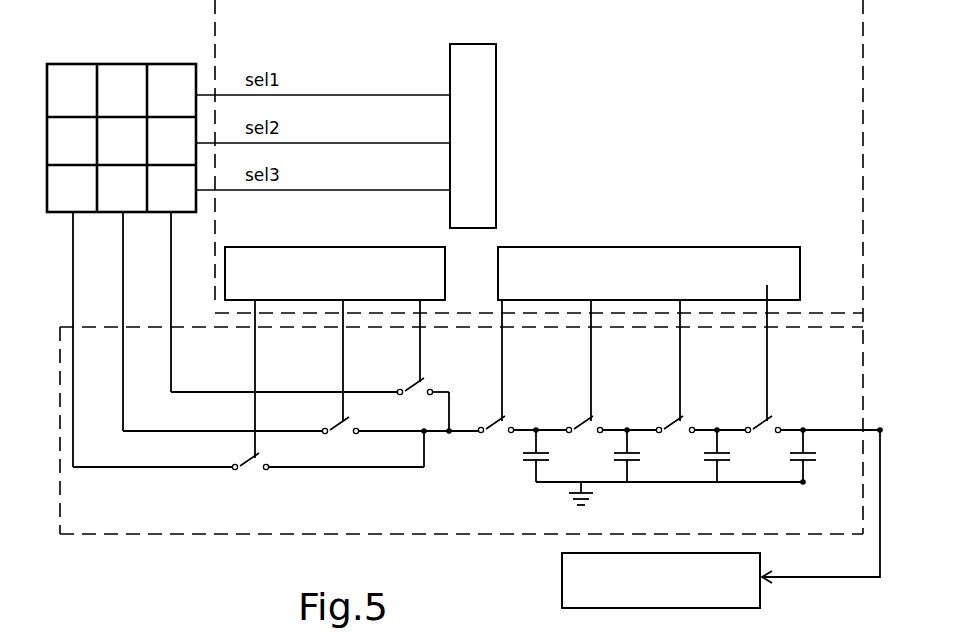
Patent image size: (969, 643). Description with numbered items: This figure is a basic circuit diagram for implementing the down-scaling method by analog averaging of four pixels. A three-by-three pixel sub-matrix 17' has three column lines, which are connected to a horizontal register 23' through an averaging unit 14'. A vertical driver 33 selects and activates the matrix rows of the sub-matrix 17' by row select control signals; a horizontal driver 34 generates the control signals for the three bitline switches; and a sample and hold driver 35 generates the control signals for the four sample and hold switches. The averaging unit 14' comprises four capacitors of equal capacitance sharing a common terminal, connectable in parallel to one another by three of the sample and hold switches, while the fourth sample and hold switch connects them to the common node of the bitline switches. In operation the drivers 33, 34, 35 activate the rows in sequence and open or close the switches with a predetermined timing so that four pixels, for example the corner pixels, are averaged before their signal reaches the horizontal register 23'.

The pixel sub-matrix 17' is at (115, 111).
The vertical driver 33 is at (497, 129).
The horizontal driver 34 is at (283, 247).
The sample and hold driver 35 is at (714, 247).
The averaging unit 14' is at (471, 397).
The horizontal register 23' is at (628, 580).